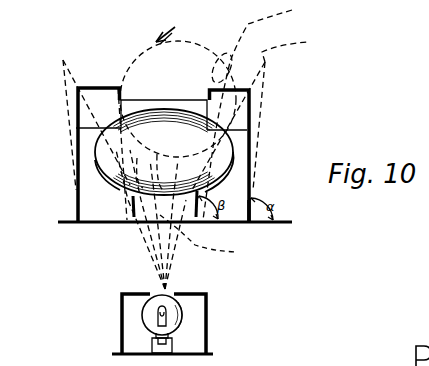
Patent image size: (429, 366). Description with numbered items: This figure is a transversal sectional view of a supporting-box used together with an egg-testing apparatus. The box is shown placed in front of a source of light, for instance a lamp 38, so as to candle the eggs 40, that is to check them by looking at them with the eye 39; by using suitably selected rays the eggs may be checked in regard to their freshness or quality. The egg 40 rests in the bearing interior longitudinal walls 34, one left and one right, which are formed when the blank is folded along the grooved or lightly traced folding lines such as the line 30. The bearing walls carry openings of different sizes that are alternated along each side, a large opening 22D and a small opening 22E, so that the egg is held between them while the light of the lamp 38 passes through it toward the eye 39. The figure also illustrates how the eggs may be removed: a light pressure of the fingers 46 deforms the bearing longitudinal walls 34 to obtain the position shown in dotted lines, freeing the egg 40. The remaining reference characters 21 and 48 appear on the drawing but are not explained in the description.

The housing 21 is at (123, 86).
The large opening 22D is at (116, 148).
The small opening 22E is at (203, 158).
The folding line 30 is at (254, 200).
The bearing interior longitudinal wall 34 is at (132, 212).
The lamp 38 is at (174, 311).
The eye 39 is at (175, 27).
The egg 40 is at (105, 182).
The finger 46 is at (297, 27).
The reflected light path 48 is at (211, 239).